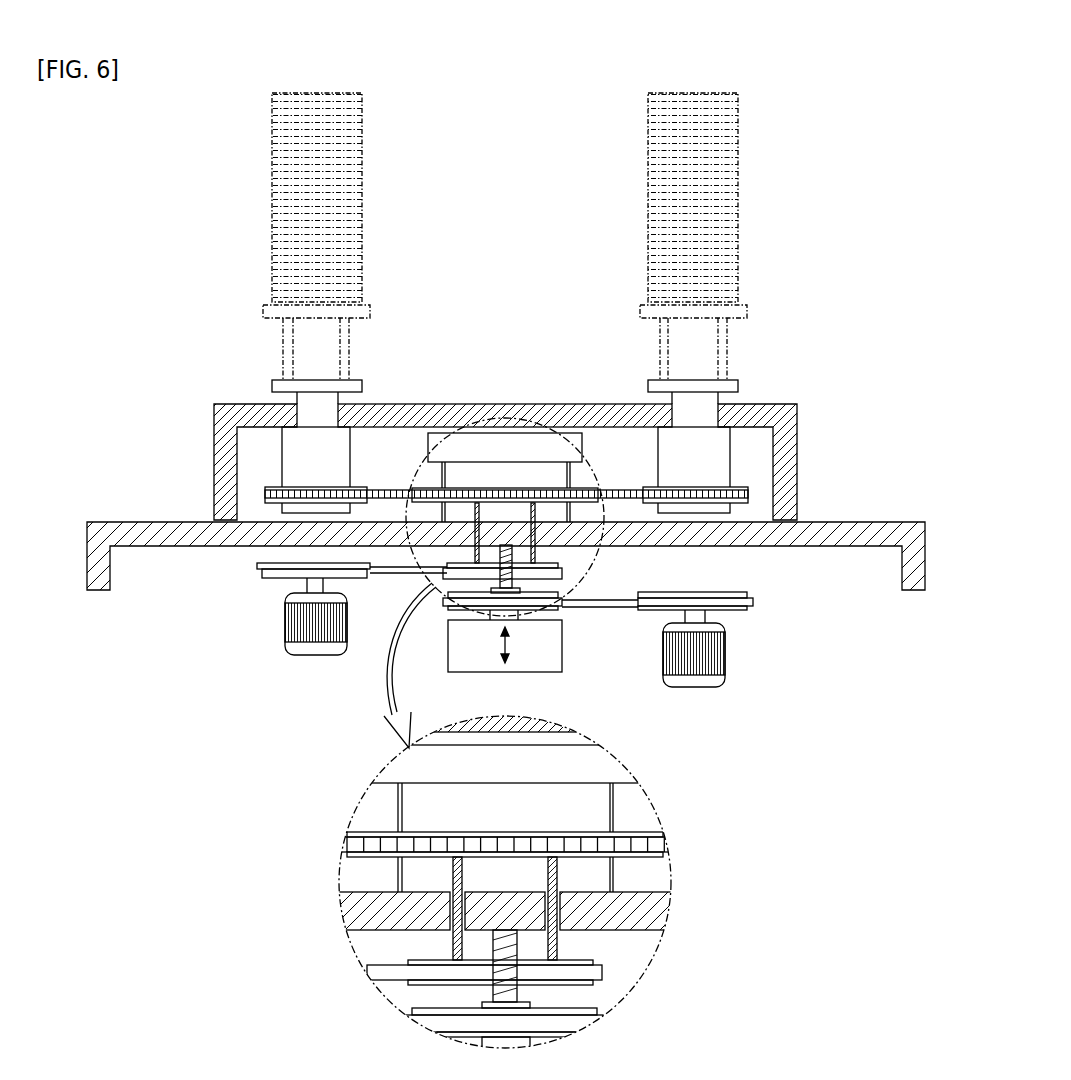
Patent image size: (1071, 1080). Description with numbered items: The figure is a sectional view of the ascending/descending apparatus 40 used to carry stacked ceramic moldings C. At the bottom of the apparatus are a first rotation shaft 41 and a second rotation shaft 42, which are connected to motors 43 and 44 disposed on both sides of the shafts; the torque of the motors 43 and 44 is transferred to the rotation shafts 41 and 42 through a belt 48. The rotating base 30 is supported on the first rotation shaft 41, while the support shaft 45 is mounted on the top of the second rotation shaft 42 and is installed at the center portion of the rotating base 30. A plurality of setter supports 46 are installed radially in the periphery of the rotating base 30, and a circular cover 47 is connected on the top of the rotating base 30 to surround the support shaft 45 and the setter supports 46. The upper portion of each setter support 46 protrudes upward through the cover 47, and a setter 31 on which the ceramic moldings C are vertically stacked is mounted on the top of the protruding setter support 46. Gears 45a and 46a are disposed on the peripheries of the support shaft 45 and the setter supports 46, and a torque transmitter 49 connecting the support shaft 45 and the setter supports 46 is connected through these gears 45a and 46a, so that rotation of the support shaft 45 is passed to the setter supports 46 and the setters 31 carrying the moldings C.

The ascending/descending apparatus 40 is at (150, 250).
The ceramic moldings C is at (738, 190).
The setter 31 is at (747, 310).
The rotating base 30 is at (138, 522).
The circular cover 47 is at (797, 420).
The setter support 46 is at (718, 455).
The gear 46a is at (735, 487).
The torque transmitter 49 is at (390, 490).
The support shaft 45 is at (548, 475).
The gear 45a is at (628, 830).
The second rotation shaft 42 is at (476, 505).
The first rotation shaft 41 is at (507, 557).
The belt 48 is at (395, 570).
The motor 43 is at (292, 624).
The motor 44 is at (722, 655).